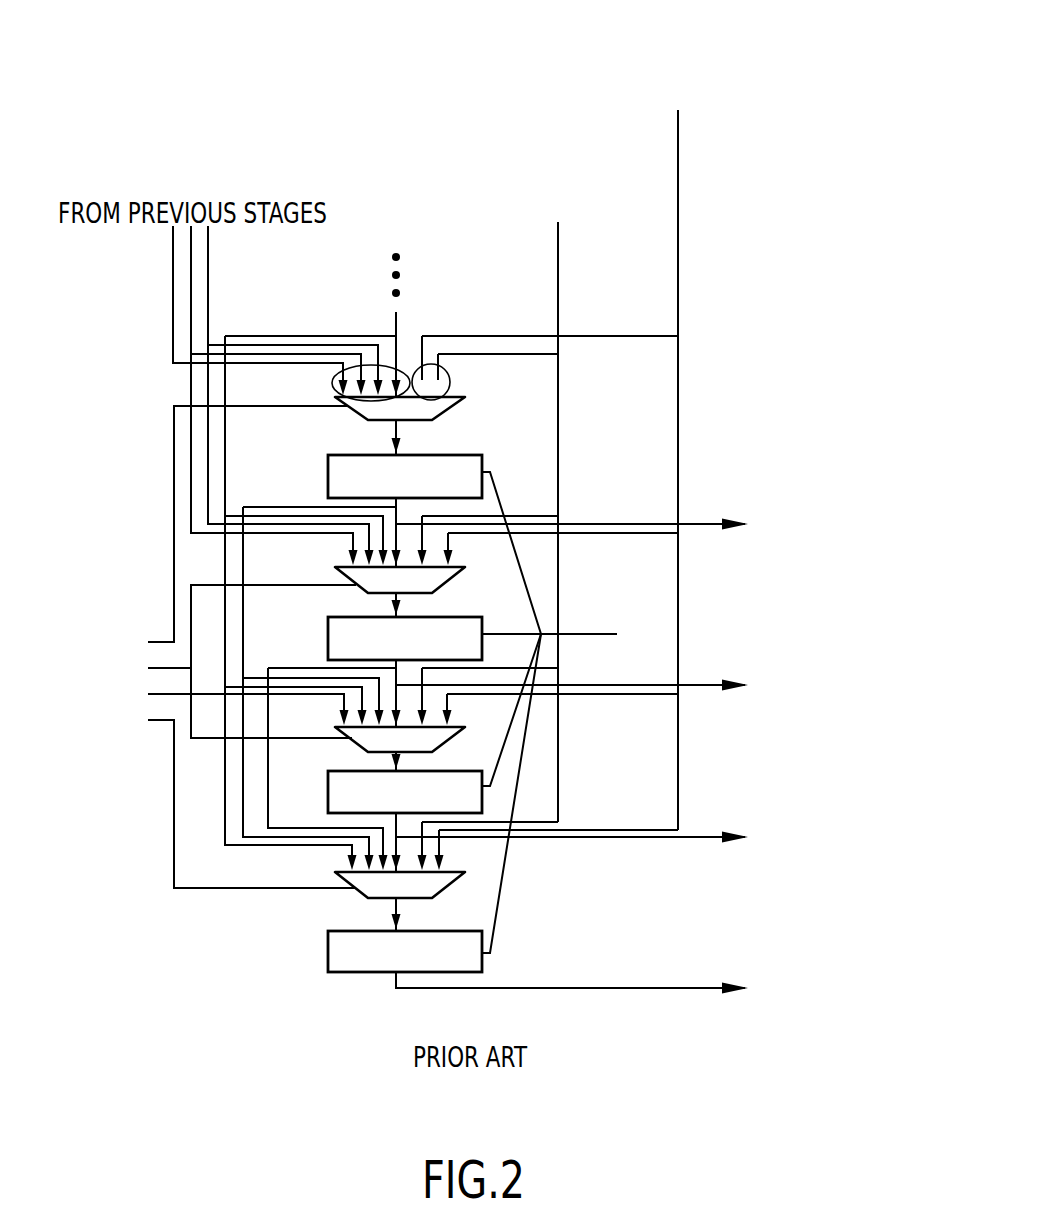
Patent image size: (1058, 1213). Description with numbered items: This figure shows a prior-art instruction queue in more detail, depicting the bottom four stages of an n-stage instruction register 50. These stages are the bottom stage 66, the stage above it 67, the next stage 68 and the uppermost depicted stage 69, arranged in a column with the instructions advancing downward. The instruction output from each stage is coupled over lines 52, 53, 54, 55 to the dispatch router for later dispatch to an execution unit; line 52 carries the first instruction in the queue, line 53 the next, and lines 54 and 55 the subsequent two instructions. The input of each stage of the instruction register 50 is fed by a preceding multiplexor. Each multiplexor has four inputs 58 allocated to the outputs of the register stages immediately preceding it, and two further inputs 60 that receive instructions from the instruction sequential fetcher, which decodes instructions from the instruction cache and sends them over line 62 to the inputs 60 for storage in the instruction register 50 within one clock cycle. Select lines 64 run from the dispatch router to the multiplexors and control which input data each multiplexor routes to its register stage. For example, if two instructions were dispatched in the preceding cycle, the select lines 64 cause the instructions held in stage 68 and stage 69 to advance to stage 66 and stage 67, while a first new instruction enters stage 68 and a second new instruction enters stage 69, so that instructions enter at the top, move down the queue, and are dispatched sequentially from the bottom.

The instruction register 50 is at (587, 633).
The line 52 is at (563, 988).
The line 53 is at (708, 837).
The line 54 is at (708, 684).
The line 55 is at (697, 522).
The inputs 58 is at (334, 376).
The inputs 60 is at (452, 372).
The line 62 is at (678, 192).
The select lines 64 is at (160, 642).
The stage(n) 66 is at (328, 955).
The stage(n-1) 67 is at (328, 796).
The stage(n-2) 68 is at (328, 641).
The stage(n-3) 69 is at (327, 483).